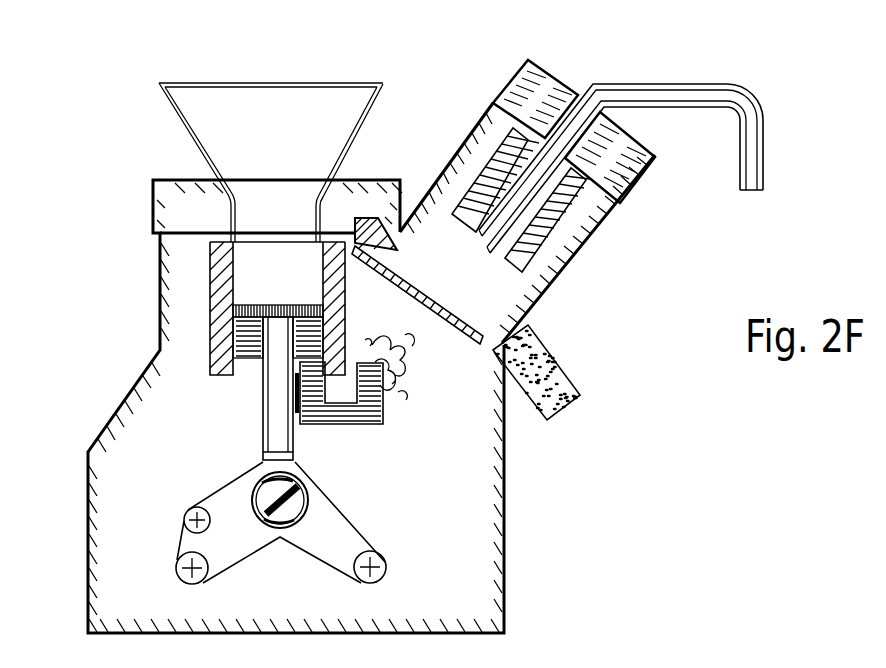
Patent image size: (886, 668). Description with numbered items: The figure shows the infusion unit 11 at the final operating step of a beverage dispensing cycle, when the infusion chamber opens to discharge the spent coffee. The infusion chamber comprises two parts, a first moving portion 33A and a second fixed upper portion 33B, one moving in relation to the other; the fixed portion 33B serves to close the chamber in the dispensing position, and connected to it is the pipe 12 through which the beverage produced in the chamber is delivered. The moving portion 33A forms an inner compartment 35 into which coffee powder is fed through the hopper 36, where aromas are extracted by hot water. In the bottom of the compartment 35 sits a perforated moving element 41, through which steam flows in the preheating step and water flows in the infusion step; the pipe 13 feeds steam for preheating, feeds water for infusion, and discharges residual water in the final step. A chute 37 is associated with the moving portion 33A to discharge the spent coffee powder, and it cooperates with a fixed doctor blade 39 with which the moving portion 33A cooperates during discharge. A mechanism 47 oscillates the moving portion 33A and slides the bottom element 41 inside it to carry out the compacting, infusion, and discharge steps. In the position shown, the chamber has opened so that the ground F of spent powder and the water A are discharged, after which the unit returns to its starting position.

The infusion unit 11 is at (108, 228).
The pipe 12 is at (671, 84).
The pipe 13 is at (352, 425).
The moving portion 33A is at (218, 287).
The fixed portion 33B is at (588, 236).
The inner compartment 35 is at (286, 290).
The hopper 36 is at (198, 126).
The chute 37 is at (424, 298).
The fixed doctor blade 39 is at (378, 218).
The perforated moving element 41 is at (256, 330).
The mechanism 47 is at (285, 549).
The water A is at (413, 367).
The ground of spent powder F is at (552, 372).